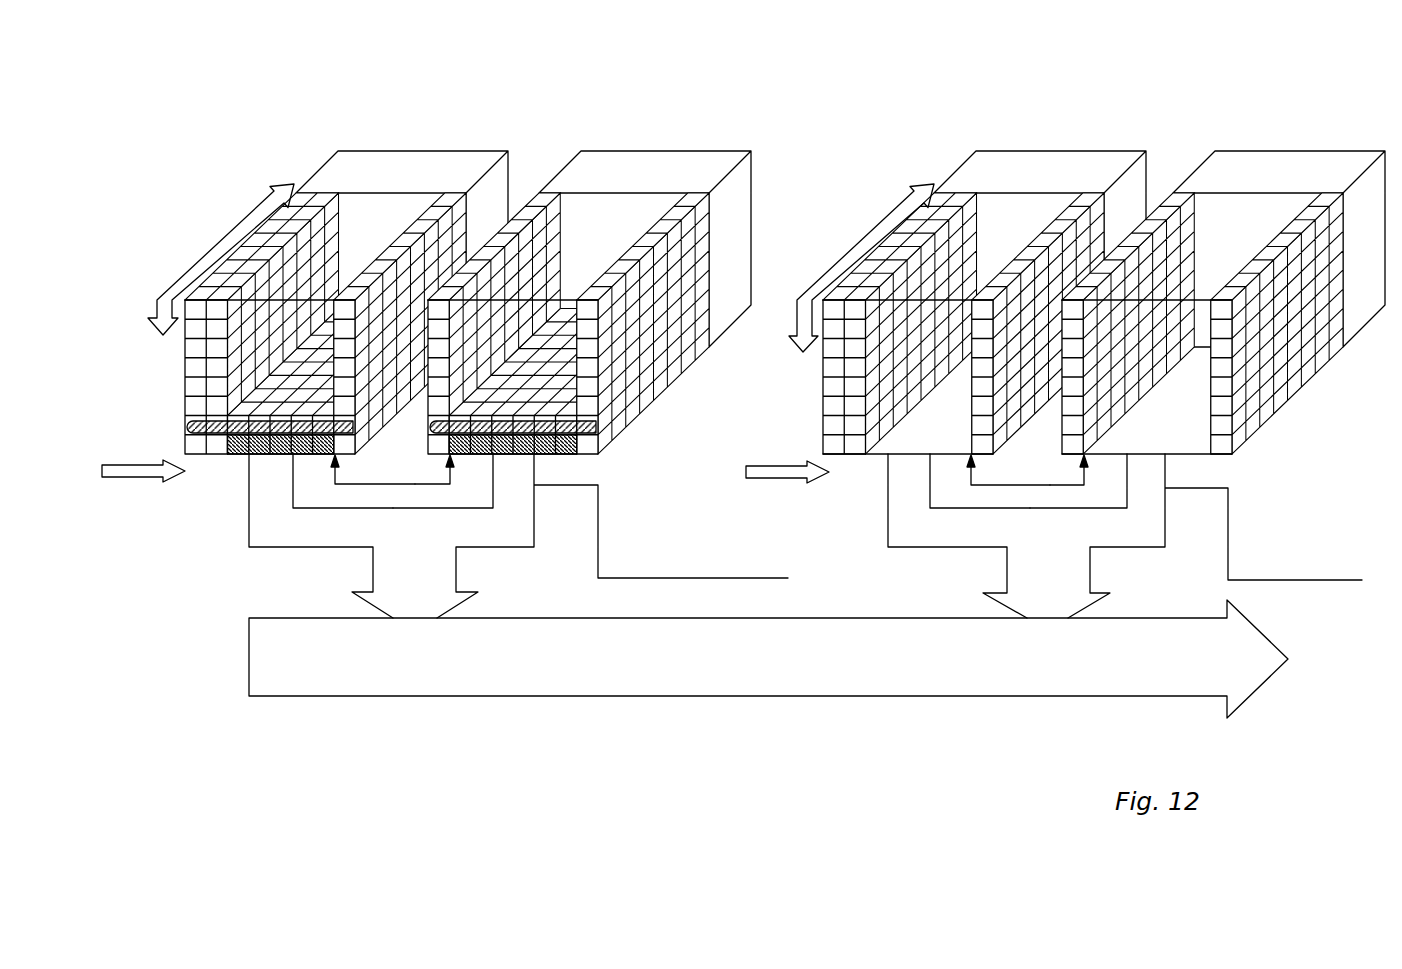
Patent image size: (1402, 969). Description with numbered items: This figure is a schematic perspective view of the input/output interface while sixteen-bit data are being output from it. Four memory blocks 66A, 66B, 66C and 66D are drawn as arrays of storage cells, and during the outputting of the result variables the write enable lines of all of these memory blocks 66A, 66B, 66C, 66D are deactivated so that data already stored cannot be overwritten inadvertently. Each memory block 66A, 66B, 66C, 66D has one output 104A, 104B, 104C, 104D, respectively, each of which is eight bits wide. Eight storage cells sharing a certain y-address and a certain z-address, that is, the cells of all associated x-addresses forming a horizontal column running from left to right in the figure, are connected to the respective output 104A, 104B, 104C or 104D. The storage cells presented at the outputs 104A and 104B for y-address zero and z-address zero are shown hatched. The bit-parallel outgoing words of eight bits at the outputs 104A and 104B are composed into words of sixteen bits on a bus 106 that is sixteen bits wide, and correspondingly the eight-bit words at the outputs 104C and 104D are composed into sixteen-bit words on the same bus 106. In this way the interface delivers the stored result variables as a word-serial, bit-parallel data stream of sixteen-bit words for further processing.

The memory block 66A is at (411, 170).
The memory block 66B is at (655, 193).
The memory block 66C is at (1045, 172).
The memory block 66D is at (1281, 183).
The output 104A is at (263, 476).
The output 104B is at (523, 493).
The output 104C is at (907, 488).
The output 104D is at (1150, 515).
The bus 106 is at (665, 675).